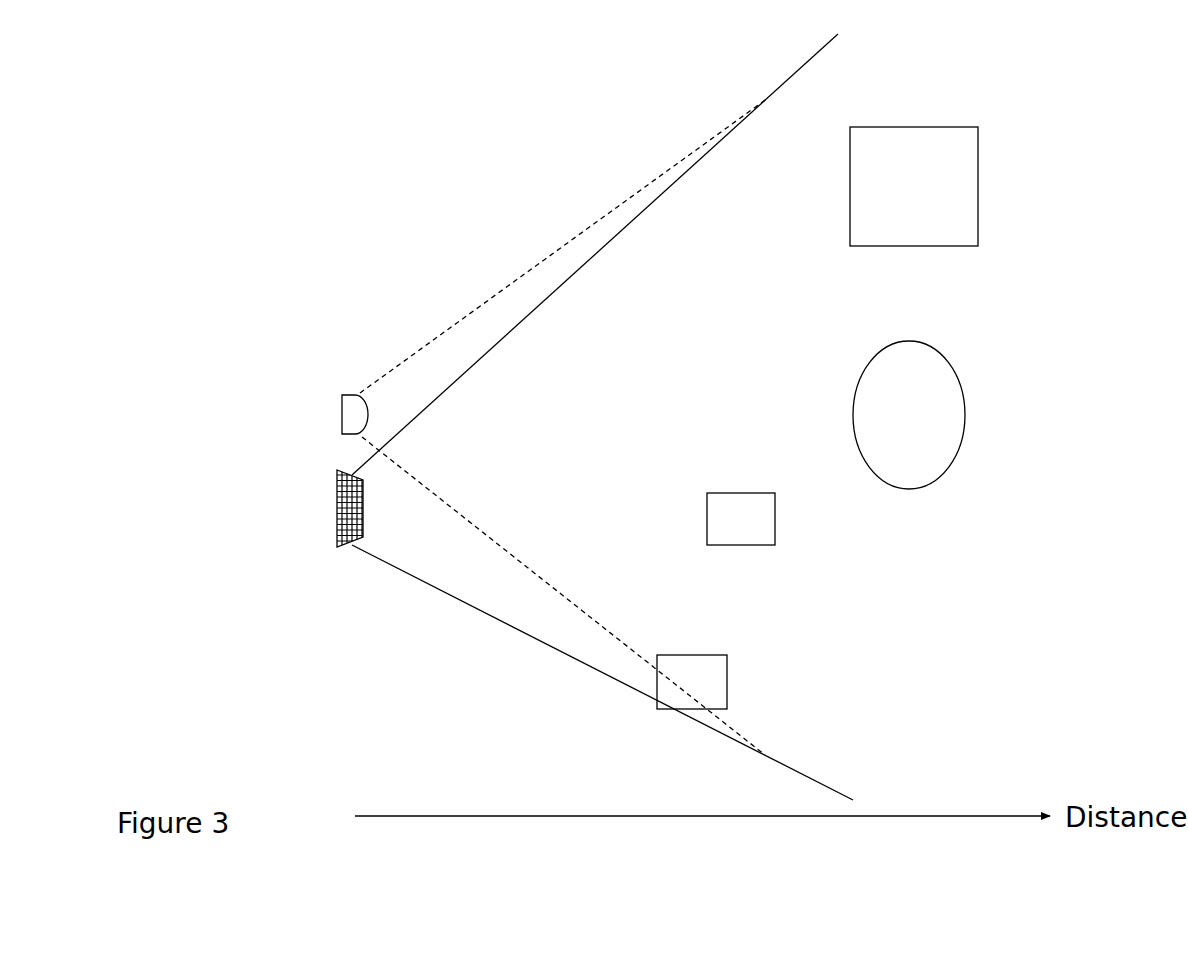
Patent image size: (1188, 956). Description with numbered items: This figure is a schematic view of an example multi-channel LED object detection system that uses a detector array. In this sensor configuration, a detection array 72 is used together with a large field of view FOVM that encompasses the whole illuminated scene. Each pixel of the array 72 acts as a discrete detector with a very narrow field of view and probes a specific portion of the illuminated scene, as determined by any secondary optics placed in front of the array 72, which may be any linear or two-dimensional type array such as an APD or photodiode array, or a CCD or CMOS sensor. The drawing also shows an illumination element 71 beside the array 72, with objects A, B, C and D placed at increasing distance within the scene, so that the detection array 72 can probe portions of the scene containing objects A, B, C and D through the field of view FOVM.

The light source / illuminator lens 71 is at (342, 412).
The detection array 72 is at (337, 508).
The object A is at (657, 698).
The object B is at (775, 534).
The object C is at (962, 442).
The object D is at (978, 205).
The field of view FOVM is at (535, 637).